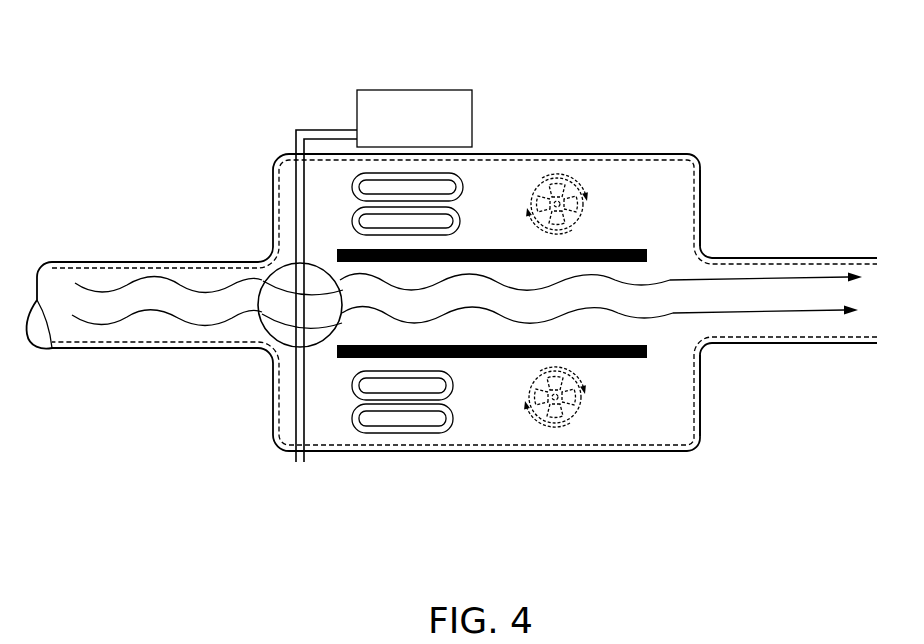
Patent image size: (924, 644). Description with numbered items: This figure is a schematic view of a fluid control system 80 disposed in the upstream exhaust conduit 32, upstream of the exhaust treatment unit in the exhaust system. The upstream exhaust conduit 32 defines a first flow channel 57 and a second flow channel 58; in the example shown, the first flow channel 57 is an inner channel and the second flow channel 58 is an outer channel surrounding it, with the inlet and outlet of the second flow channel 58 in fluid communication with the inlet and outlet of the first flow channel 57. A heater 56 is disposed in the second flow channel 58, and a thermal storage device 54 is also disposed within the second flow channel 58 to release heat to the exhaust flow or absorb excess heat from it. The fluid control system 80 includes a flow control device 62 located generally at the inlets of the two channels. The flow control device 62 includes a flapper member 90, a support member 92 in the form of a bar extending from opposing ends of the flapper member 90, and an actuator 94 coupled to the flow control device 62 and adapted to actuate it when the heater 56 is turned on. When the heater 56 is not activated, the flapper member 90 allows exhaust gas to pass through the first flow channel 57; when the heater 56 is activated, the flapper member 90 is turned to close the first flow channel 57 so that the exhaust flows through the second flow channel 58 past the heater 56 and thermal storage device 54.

The fluid control system 80 is at (452, 229).
The upstream exhaust conduit 32 is at (648, 143).
The flow control device 62 is at (258, 270).
The support member 92 is at (295, 205).
The flapper member 90 is at (267, 335).
The actuator 94 is at (403, 90).
The heater 56 is at (466, 177).
The thermal storage device 54 is at (575, 413).
The first flow channel 57 is at (764, 323).
The second flow channel 58 is at (686, 212).